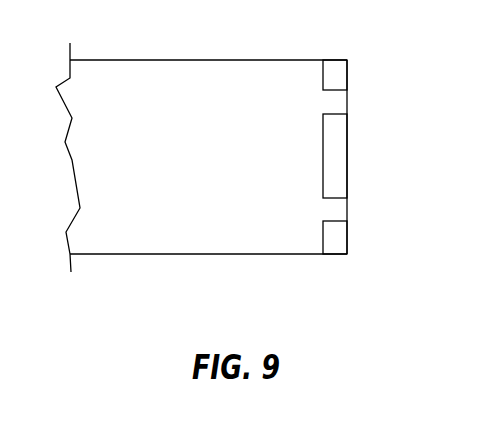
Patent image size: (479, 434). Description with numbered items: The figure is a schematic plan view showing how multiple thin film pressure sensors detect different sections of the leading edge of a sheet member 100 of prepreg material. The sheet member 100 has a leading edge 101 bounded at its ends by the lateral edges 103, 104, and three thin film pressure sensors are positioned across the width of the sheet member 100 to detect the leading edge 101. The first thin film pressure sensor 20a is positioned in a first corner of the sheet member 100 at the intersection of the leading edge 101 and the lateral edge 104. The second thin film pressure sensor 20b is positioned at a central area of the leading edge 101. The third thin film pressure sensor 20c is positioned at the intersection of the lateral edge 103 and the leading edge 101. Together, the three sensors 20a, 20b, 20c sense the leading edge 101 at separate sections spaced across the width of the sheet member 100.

The sheet member 100 is at (134, 93).
The leading edge 101 is at (347, 210).
The lateral edge 103 is at (200, 60).
The lateral edge 104 is at (240, 255).
The first thin film pressure sensor 20a is at (335, 238).
The second thin film pressure sensor 20b is at (338, 147).
The third thin film pressure sensor 20c is at (335, 80).